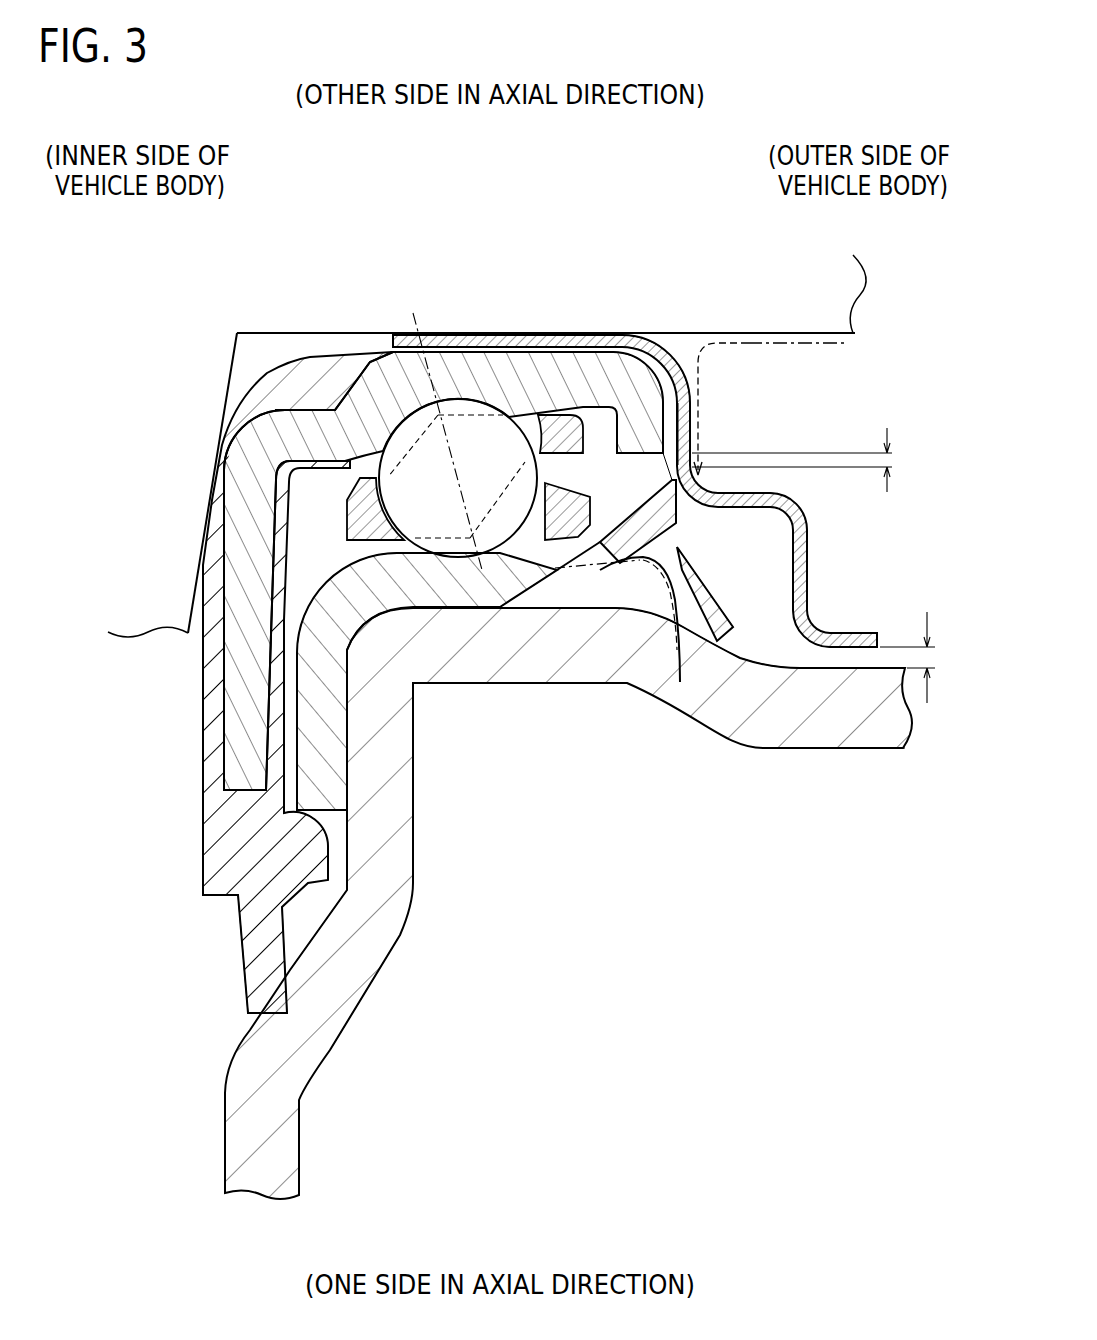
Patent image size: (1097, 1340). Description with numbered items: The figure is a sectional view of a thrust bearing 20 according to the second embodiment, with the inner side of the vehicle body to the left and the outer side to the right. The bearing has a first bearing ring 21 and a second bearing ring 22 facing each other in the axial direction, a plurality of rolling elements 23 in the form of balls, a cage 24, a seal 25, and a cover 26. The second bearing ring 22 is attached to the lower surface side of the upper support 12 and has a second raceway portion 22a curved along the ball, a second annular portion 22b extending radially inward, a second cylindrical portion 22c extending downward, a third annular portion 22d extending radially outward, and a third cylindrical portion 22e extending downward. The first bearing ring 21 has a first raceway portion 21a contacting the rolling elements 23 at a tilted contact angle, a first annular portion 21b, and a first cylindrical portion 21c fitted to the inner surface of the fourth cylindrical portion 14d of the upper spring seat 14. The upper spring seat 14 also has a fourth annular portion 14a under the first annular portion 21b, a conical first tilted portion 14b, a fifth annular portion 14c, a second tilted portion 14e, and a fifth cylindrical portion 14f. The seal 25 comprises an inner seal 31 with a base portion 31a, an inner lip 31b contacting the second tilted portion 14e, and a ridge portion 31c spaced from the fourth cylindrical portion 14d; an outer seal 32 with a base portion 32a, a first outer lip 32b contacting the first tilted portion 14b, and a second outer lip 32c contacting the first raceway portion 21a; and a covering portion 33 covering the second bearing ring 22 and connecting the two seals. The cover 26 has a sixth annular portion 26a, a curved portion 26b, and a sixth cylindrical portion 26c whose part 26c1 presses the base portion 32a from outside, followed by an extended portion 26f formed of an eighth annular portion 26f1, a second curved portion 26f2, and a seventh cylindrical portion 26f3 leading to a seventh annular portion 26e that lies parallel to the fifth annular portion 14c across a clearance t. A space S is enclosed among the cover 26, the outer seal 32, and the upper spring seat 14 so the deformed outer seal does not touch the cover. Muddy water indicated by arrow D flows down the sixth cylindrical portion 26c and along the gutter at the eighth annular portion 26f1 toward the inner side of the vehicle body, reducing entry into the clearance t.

The upper support 12 is at (259, 333).
The upper spring seat 14 is at (782, 761).
The fourth annular portion 14a is at (500, 660).
The first tilted portion 14b is at (735, 655).
The fifth annular portion 14c is at (862, 735).
The fourth cylindrical portion 14d is at (377, 792).
The second tilted portion 14e is at (363, 970).
The fifth cylindrical portion 14f is at (287, 1143).
The thrust bearing 20 is at (773, 386).
The first bearing ring 21 is at (420, 585).
The first raceway portion 21a is at (530, 618).
The first annular portion 21b is at (440, 690).
The first cylindrical portion 21c is at (318, 727).
The second bearing ring 22 is at (346, 388).
The second raceway portion 22a is at (357, 380).
The second annular portion 22b is at (310, 433).
The second cylindrical portion 22c is at (235, 528).
The third annular portion 22d is at (517, 372).
The third cylindrical portion 22e is at (645, 402).
The rolling element 23 is at (468, 430).
The cage 24 is at (555, 410).
The seal 25 is at (167, 779).
The cover 26 is at (797, 490).
The sixth annular portion 26a is at (438, 337).
The curved portion 26b is at (663, 360).
The sixth cylindrical portion 26c is at (690, 438).
The part of the sixth cylindrical portion 26c1 is at (893, 462).
The seventh annular portion 26e is at (853, 632).
The extended portion 26f is at (820, 590).
The eighth annular portion 26f1 is at (758, 491).
The second curved portion 26f2 is at (793, 503).
The seventh cylindrical portion 26f3 is at (808, 550).
The inner seal 31 is at (180, 836).
The base portion 31a is at (213, 863).
The inner lip 31b is at (250, 1010).
The ridge portion 31c is at (320, 860).
The outer seal 32 is at (647, 589).
The base portion 32a is at (693, 432).
The first outer lip 32b is at (690, 632).
The second outer lip 32c is at (567, 600).
The covering portion 33 is at (258, 398).
The arrow D is at (748, 333).
The space S is at (751, 592).
The clearance t is at (932, 661).